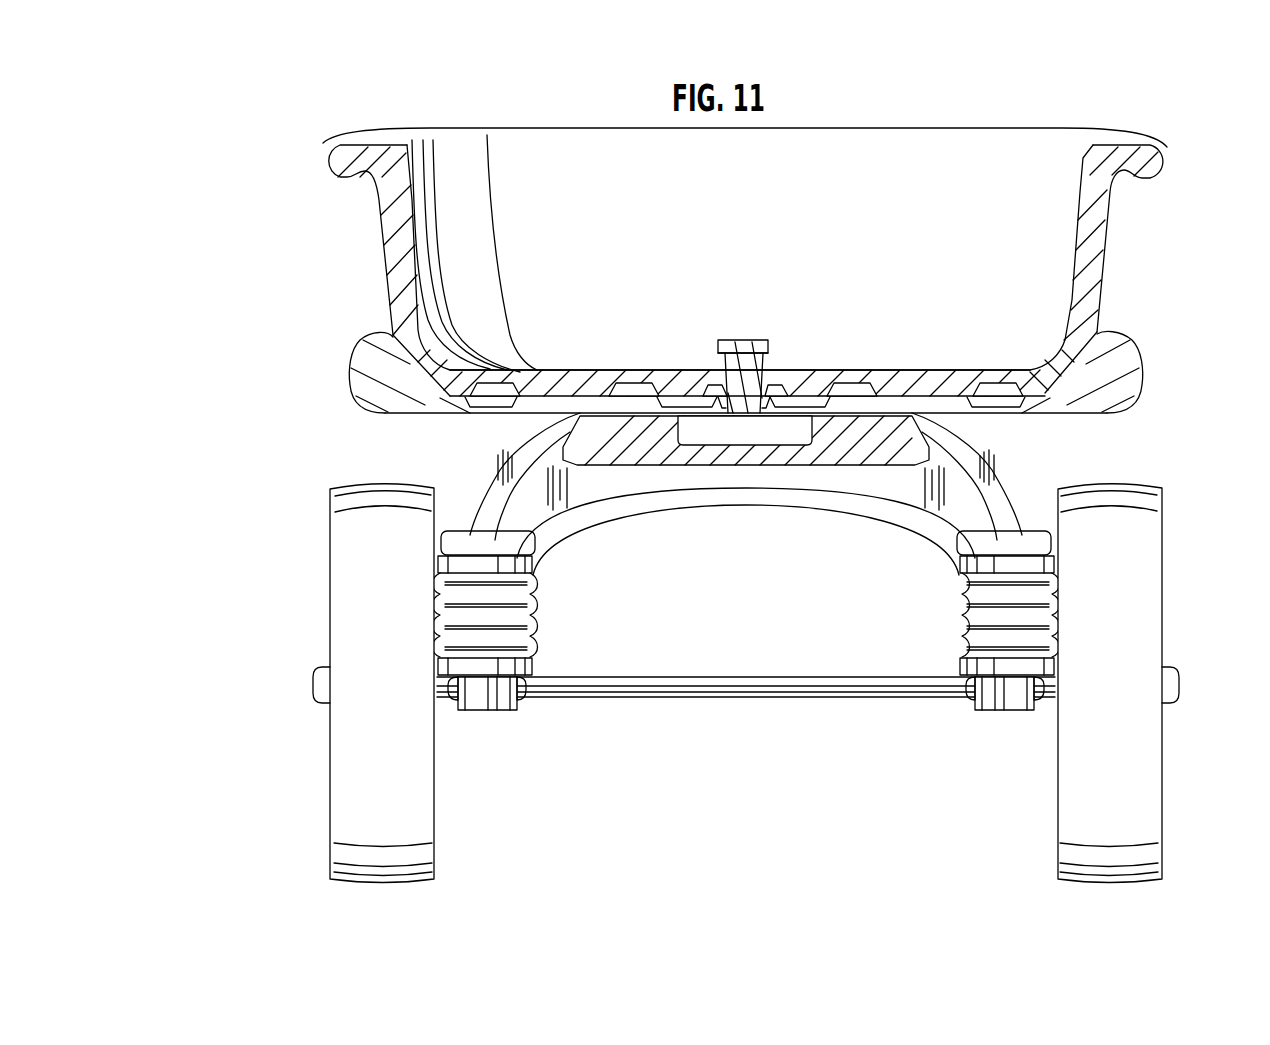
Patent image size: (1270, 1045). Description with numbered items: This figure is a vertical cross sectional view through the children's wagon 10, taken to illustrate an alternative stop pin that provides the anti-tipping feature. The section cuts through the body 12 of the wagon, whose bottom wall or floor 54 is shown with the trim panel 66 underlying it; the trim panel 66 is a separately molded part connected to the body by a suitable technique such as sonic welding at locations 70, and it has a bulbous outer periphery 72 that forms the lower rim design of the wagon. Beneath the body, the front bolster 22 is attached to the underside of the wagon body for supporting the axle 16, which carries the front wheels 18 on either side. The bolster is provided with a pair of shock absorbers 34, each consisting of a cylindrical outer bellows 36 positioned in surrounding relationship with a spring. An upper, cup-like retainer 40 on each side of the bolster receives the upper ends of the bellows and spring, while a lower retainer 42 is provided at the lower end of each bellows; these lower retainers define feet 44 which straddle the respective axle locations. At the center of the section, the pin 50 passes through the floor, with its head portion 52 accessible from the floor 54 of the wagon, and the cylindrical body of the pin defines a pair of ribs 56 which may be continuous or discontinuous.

The children's wagon 10 is at (320, 124).
The body 12 is at (379, 198).
The axle 16 is at (753, 688).
The front wheels 18 is at (352, 594).
The front bolster 22 is at (486, 481).
The shock absorbers 34 is at (533, 560).
The outer bellows 36 is at (536, 664).
The upper retainer 40 is at (540, 597).
The lower retainer 42 is at (516, 690).
The feet 44 is at (450, 690).
The pin 50 is at (735, 338).
The head portion 52 is at (762, 334).
The floor 54 is at (533, 368).
The ribs 56 is at (714, 353).
The trim panel 66 is at (562, 420).
The locations 70 is at (493, 387).
The bulbous outer periphery 72 is at (356, 372).